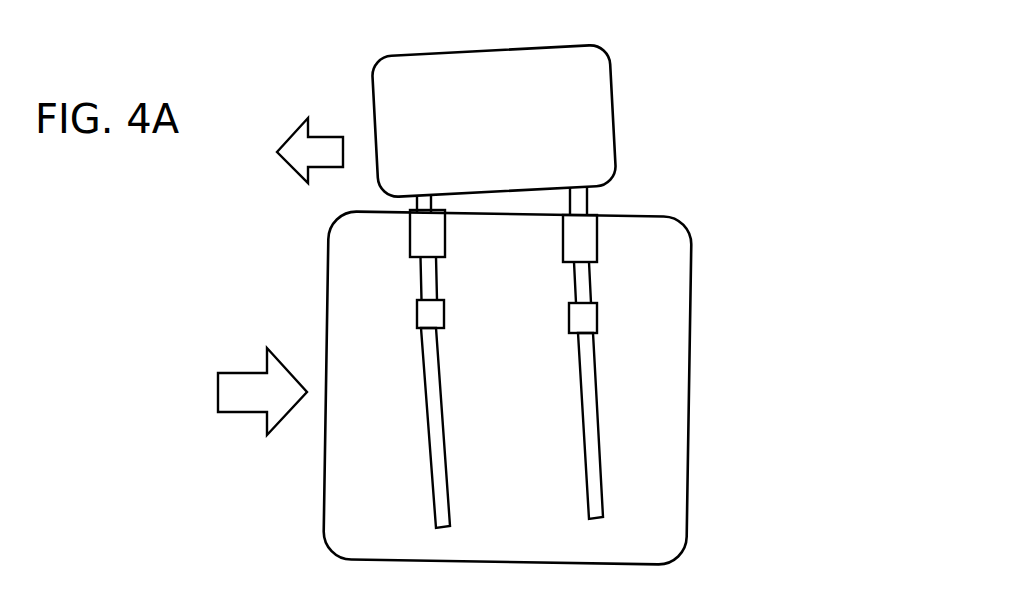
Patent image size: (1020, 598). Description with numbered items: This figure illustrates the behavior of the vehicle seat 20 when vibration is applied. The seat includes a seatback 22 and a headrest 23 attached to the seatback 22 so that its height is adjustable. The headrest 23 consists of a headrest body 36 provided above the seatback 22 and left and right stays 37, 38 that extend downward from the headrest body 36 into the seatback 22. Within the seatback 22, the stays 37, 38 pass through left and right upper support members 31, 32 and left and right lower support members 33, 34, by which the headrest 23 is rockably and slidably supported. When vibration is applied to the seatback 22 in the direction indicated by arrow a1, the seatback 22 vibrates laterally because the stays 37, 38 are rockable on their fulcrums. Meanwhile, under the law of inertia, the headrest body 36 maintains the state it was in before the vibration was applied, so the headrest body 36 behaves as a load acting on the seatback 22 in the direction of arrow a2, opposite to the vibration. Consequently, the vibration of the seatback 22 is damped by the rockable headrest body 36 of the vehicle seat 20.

The vehicle seat 20 is at (285, 91).
The seatback 22 is at (678, 372).
The headrest 23 is at (628, 110).
The upper support member 31 is at (590, 242).
The upper support member 32 is at (437, 240).
The lower support member 33 is at (590, 318).
The lower support member 34 is at (437, 315).
The headrest body 36 is at (442, 70).
The stay 37 is at (595, 457).
The stay 38 is at (442, 458).
The arrow a1 is at (262, 385).
The arrow a2 is at (310, 142).